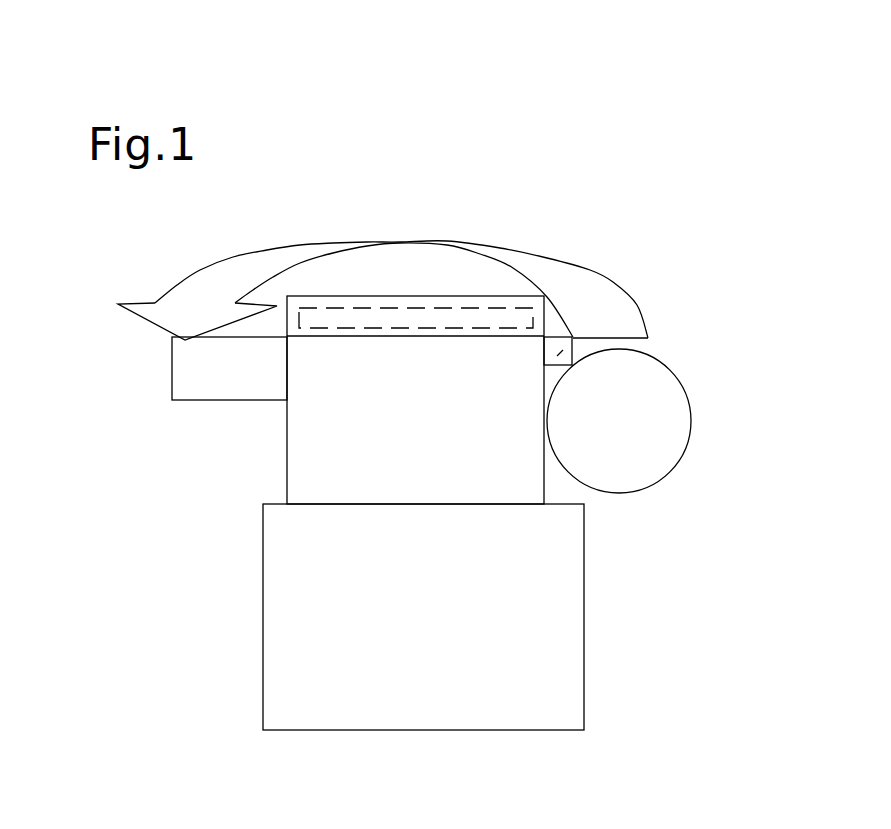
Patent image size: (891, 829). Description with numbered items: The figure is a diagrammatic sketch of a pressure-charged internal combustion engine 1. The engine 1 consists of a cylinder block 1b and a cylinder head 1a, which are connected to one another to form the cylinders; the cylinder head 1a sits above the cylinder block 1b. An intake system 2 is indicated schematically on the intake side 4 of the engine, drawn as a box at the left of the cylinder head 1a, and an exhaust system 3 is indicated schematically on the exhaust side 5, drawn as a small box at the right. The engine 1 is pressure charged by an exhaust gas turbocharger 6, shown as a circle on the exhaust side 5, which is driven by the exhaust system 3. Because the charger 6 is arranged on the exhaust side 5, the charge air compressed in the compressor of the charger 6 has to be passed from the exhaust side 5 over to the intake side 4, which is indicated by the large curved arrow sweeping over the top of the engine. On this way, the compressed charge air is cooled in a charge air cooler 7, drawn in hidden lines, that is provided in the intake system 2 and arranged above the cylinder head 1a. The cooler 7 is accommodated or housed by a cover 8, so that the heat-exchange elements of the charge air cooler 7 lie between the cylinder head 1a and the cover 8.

The internal combustion engine 1 is at (529, 454).
The cylinder head 1a is at (427, 450).
The cylinder block 1b is at (430, 624).
The intake system 2 is at (207, 390).
The exhaust system 3 is at (573, 340).
The intake side 4 is at (61, 431).
The exhaust side 5 is at (857, 427).
The exhaust gas turbocharger 6 is at (653, 432).
The charge air cooler 7 is at (440, 317).
The cover 8 is at (370, 292).